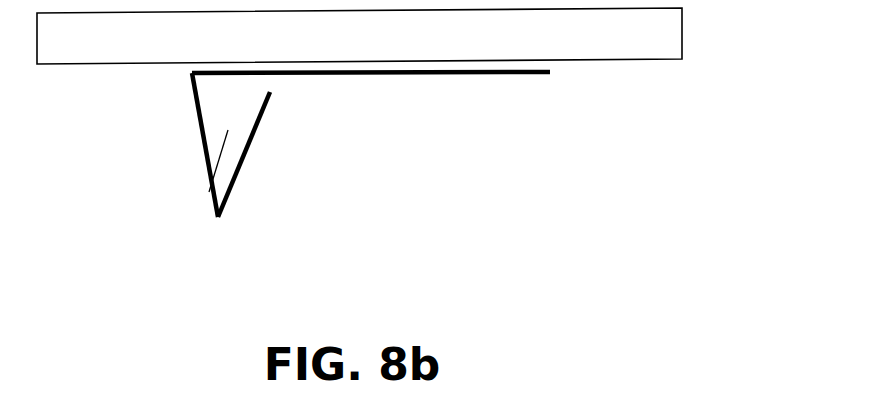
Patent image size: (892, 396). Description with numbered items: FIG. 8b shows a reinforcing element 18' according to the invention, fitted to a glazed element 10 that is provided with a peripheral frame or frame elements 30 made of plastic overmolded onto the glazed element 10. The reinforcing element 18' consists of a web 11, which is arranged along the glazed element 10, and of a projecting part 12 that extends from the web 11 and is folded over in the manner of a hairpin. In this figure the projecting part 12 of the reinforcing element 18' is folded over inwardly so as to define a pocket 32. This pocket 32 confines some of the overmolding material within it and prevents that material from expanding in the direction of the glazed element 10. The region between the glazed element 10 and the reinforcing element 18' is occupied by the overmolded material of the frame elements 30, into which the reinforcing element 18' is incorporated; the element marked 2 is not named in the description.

The glazed element 10 is at (372, 47).
The substrate 2 is at (404, 143).
The web 11 is at (380, 123).
The projecting part 12 is at (200, 125).
The reinforcing element 18' is at (273, 173).
The pocket 32 is at (209, 192).
The frame elements 30 is at (704, 145).